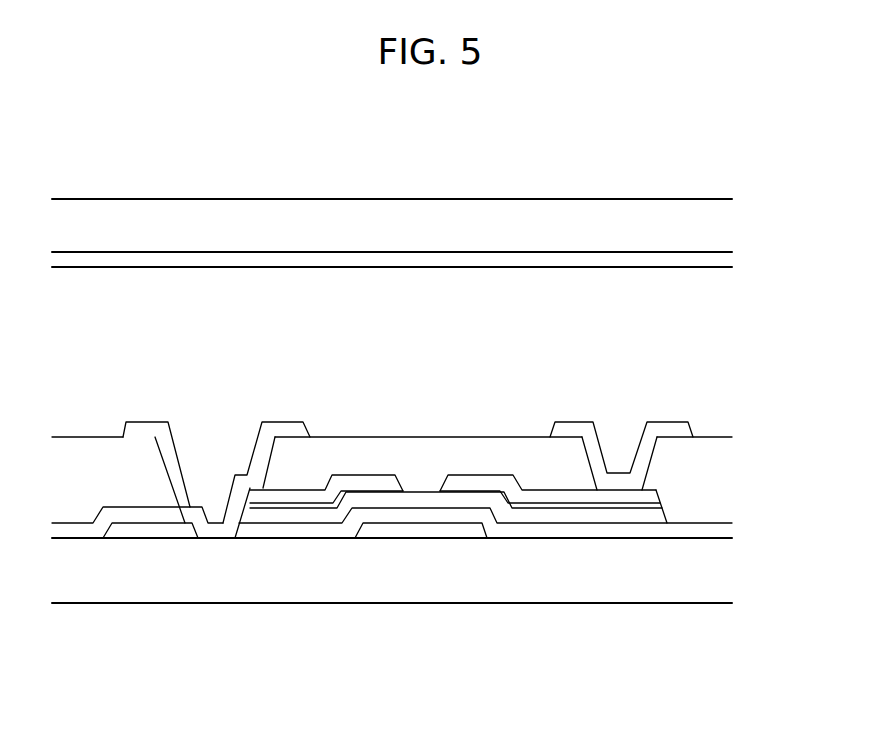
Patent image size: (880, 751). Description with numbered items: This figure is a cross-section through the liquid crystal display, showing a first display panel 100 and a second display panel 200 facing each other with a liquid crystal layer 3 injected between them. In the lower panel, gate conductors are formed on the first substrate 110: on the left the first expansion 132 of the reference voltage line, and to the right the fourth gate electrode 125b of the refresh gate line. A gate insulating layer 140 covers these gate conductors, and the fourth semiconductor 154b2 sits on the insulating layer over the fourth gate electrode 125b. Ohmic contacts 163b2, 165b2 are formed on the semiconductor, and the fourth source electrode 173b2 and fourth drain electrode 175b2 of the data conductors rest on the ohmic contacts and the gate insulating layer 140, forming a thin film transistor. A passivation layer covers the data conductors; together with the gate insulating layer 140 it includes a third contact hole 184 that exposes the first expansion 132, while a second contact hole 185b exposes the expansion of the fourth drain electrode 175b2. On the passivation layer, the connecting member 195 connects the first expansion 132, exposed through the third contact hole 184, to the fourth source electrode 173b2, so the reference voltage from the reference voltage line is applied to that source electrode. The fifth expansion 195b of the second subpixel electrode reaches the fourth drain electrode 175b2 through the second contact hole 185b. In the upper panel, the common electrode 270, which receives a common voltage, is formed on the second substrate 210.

The liquid crystal layer 3 is at (744, 437).
The first display panel 100 is at (422, 517).
The first substrate 110 is at (660, 570).
The fourth gate electrode 125b is at (434, 535).
The first expansion 132 is at (137, 528).
The gate insulating layer 140 is at (545, 525).
The fourth semiconductor 154b2 is at (385, 498).
The ohmic contact 163b2 is at (260, 507).
The ohmic contact 165b2 is at (482, 498).
The fourth source electrode 173b2 is at (325, 497).
The fourth drain electrode 175b2 is at (595, 497).
The third contact hole 184 is at (170, 448).
The second contact hole 185b is at (588, 452).
The connecting member 195 is at (285, 428).
The fifth expansion 195b is at (664, 428).
The second display panel 200 is at (422, 215).
The second substrate 210 is at (587, 228).
The common electrode 270 is at (510, 262).